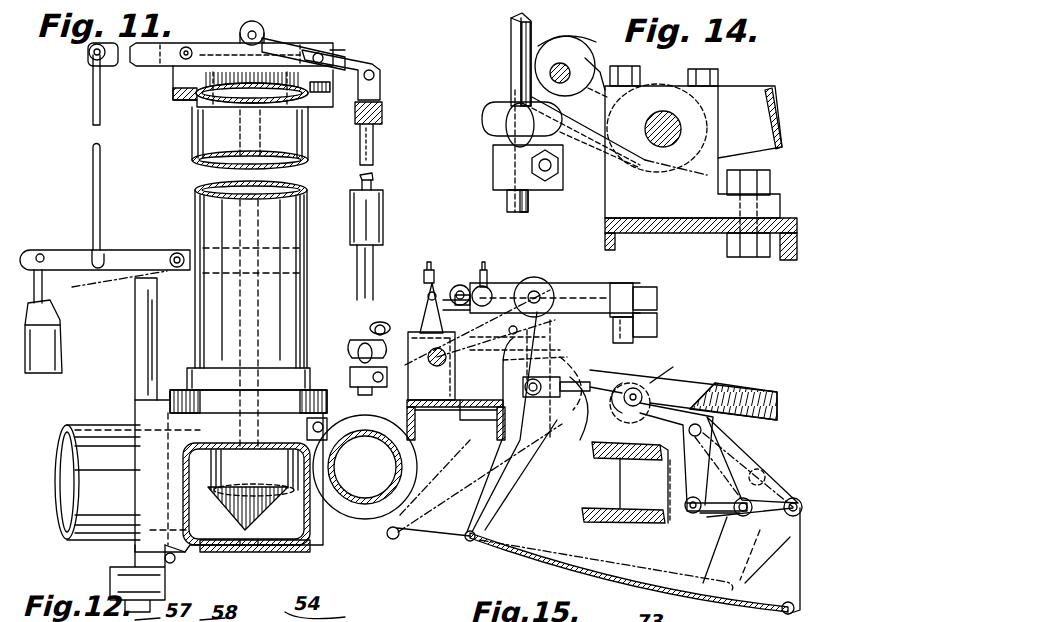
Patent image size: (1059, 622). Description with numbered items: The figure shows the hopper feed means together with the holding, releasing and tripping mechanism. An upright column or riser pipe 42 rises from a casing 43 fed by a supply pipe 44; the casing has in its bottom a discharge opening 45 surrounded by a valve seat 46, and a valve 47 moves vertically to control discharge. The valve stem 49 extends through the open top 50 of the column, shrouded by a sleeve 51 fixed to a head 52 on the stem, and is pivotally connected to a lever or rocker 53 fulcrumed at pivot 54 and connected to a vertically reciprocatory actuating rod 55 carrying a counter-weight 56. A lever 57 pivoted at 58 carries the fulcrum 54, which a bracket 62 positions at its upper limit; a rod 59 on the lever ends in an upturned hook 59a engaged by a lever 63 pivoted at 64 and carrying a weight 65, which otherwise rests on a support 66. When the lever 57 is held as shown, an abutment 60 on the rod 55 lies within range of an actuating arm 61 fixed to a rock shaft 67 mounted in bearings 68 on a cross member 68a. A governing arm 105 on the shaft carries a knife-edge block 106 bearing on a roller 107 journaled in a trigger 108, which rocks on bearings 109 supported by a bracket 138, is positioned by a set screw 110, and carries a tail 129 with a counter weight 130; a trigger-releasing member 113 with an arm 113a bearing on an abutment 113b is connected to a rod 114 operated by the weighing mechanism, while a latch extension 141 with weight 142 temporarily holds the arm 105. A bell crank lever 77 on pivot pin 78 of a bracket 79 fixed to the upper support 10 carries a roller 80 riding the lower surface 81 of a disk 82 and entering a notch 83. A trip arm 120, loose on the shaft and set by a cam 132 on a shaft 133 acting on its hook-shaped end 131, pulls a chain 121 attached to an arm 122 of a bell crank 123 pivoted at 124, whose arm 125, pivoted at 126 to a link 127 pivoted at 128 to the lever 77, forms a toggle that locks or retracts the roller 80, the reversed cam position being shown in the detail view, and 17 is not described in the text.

In FIG. 11, the lever 57 is at (150, 38).
In FIG. 11, the pivot 58 is at (190, 46).
In FIG. 11, the lever or rocker 53 is at (264, 25).
In FIG. 11, the head 52 is at (335, 52).
In FIG. 11, the bracket 62 is at (345, 50).
In FIG. 11, the pivot or fulcrum 54 is at (350, 60).
In FIG. 11, the open top 50 is at (185, 98).
In FIG. 11, the rod 59 is at (100, 190).
In FIG. 11, the upturned hook 59a is at (104, 262).
In FIG. 11, the pivot 64 is at (190, 238).
In FIG. 11, the lever 63 is at (68, 240).
In FIG. 11, the stem or rod 49 is at (255, 229).
In FIG. 11, the sleeve 51 is at (283, 293).
In FIG. 11, the actuating rod 55 is at (373, 176).
In FIG. 14, the actuating rod 55 is at (511, 50).
In FIG. 11, the counter-weight 56 is at (383, 210).
In FIG. 11, the support 66 is at (135, 316).
In FIG. 11, the column or riser pipe 42 is at (198, 316).
In FIG. 11, the weight 65 is at (43, 321).
In FIG. 11, the supply pipe 44 is at (85, 416).
In FIG. 11, the valve 47 is at (246, 494).
In FIG. 11, the casing 43 is at (325, 535).
In FIG. 11, the valve seat 46 is at (195, 545).
In FIG. 11, the discharge opening 45 is at (247, 545).
In FIG. 11, the ring 17 is at (365, 467).
In FIG. 11, the hook-shaped end 131 is at (455, 300).
In FIG. 14, the hook-shaped end 131 is at (550, 42).
In FIG. 11, the cam or eccentric 132 is at (445, 314).
In FIG. 14, the cam or eccentric 132 is at (580, 56).
In FIG. 11, the shaft 133 is at (445, 328).
In FIG. 14, the shaft 133 is at (550, 74).
In FIG. 11, the actuating arm 61 is at (348, 350).
In FIG. 14, the actuating arm 61 is at (482, 122).
In FIG. 11, the abutment 60 is at (350, 378).
In FIG. 14, the abutment 60 is at (493, 180).
In FIG. 11, the rock shaft 67 is at (430, 366).
In FIG. 14, the rock shaft 67 is at (660, 146).
In FIG. 11, the bearings 68 is at (425, 408).
In FIG. 14, the bearings 68 is at (707, 175).
In FIG. 11, the cross member 68a is at (465, 445).
In FIG. 14, the cross member 68a is at (705, 235).
In FIG. 11, the bracket 138 is at (478, 412).
In FIG. 11, the set screw 110 is at (434, 270).
In FIG. 11, the member 106 is at (468, 270).
In FIG. 11, the trigger 108 is at (485, 286).
In FIG. 11, the roller 107 is at (487, 280).
In FIG. 11, the set screw or abutment 113b is at (516, 314).
In FIG. 11, the arm 113a is at (528, 280).
In FIG. 11, the governing arm 105 is at (420, 295).
In FIG. 11, the bearings 109 is at (590, 268).
In FIG. 11, the tail or extension 129 is at (620, 283).
In FIG. 11, the counter weight 130 is at (645, 287).
In FIG. 11, the extension 141 is at (657, 323).
In FIG. 11, the weight 142 is at (633, 342).
In FIG. 11, the trigger-releasing member 113 is at (548, 352).
In FIG. 11, the rod 114 is at (605, 382).
In FIG. 11, the notch or recess 83 is at (678, 368).
In FIG. 11, the lower surface 81 is at (710, 384).
In FIG. 11, the disk 82 is at (757, 387).
In FIG. 11, the roller or projection 80 is at (623, 405).
In FIG. 11, the pivot pin 78 is at (700, 428).
In FIG. 11, the bell crank lever 77 is at (730, 460).
In FIG. 11, the bracket 79 is at (770, 465).
In FIG. 11, the arm 125 is at (763, 470).
In FIG. 11, the pivot 124 is at (793, 498).
In FIG. 11, the upper support 10 is at (625, 452).
In FIG. 11, the trip arm 120 is at (500, 497).
In FIG. 14, the trip arm 120 is at (738, 92).
In FIG. 11, the pivot 128 is at (677, 520).
In FIG. 11, the link 127 is at (693, 520).
In FIG. 11, the pivot 126 is at (737, 527).
In FIG. 11, the bell crank 123 is at (770, 520).
In FIG. 11, the arm 122 is at (790, 575).
In FIG. 11, the chain, cable or the like 121 is at (572, 578).